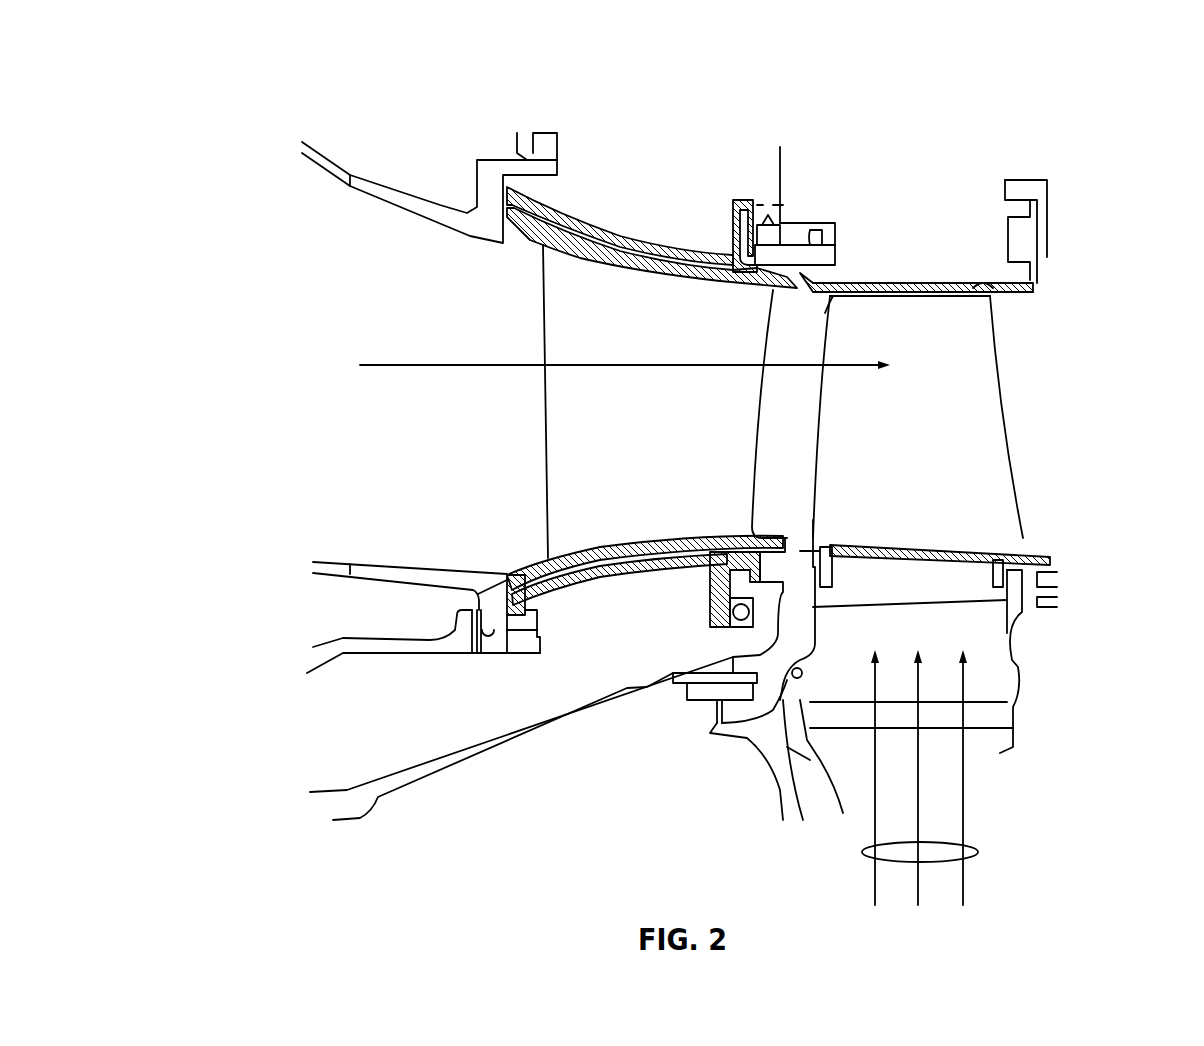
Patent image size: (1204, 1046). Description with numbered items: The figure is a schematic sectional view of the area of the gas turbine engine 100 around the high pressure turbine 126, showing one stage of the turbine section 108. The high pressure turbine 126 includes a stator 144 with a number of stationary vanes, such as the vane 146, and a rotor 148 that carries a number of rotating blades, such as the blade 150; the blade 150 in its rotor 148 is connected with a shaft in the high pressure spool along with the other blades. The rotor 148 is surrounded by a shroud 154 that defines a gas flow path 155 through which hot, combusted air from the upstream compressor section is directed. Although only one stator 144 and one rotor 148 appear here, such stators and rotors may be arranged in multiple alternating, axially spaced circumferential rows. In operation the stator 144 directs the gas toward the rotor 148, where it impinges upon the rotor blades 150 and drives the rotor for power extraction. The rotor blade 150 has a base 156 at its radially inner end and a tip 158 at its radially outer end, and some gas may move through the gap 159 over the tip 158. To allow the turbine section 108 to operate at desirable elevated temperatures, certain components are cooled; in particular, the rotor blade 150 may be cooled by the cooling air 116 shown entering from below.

The engine 100 is at (328, 85).
The turbine section 108 is at (736, 180).
The high pressure turbine 126 is at (1008, 156).
The shroud 154 is at (1033, 282).
The tip 158 is at (1013, 291).
The gap 159 is at (828, 302).
The gas flow path 155 is at (435, 355).
The vane 146 is at (672, 421).
The blade 150 is at (932, 421).
The base 156 is at (1025, 555).
The rotor 148 is at (1030, 618).
The stator 144 is at (617, 580).
The cooling air 116 is at (980, 852).